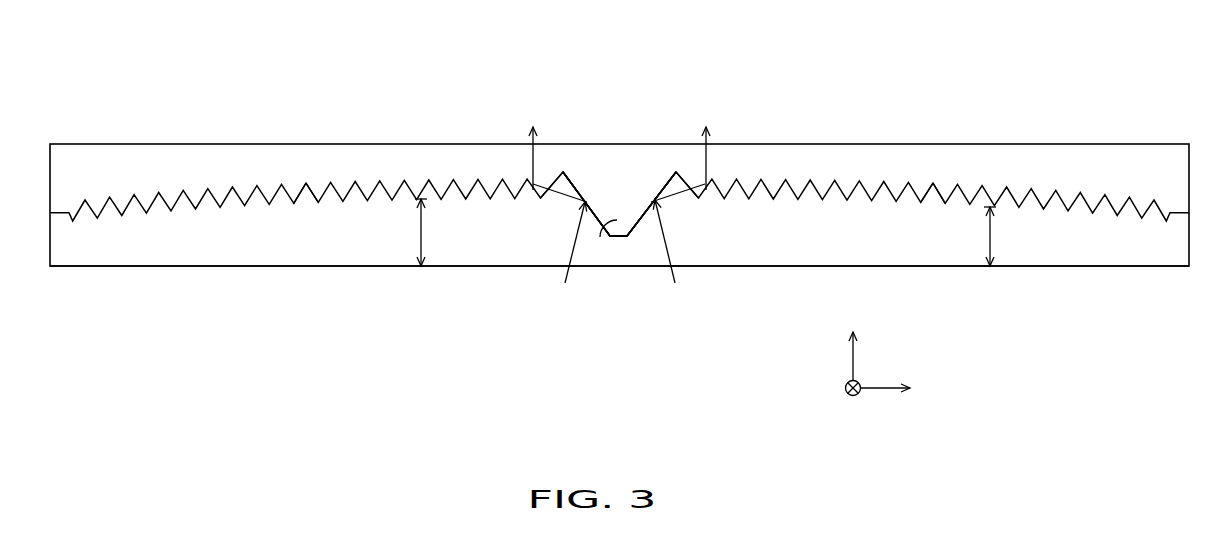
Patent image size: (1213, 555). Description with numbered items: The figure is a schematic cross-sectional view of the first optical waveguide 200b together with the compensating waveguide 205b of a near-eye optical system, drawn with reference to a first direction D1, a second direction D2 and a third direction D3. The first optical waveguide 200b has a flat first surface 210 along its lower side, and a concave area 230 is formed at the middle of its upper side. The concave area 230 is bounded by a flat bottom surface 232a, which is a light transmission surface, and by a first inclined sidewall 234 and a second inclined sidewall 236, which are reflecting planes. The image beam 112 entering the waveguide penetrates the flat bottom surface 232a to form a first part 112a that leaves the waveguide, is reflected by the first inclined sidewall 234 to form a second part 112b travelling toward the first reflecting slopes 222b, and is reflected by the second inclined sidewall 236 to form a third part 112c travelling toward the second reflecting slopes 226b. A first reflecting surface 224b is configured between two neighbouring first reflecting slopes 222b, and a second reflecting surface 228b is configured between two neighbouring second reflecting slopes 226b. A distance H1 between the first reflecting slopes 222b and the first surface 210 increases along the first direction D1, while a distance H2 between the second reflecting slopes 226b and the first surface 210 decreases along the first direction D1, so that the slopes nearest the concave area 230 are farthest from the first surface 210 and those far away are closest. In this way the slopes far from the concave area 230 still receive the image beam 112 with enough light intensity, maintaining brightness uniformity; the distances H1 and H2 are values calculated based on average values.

The compensating waveguide 205b is at (164, 176).
The first reflecting surface 224b is at (302, 193).
The first reflecting slopes 222b is at (313, 193).
The first inclined sidewall 234 is at (584, 198).
The concave area 230 is at (602, 183).
The flat bottom surface 232a is at (622, 237).
The second inclined sidewall 236 is at (661, 193).
The second reflecting slopes 226b is at (927, 193).
The second reflecting surface 228b is at (938, 193).
The first optical waveguide 200b is at (249, 248).
The distance H1 is at (422, 232).
The second part of the image beam 112b is at (557, 193).
The first part of the image beam 112a is at (617, 195).
The third part of the image beam 112c is at (683, 191).
The image beam 112 is at (673, 362).
The first surface 210 is at (767, 267).
The distance H2 is at (992, 236).
The first direction D1 is at (899, 389).
The second direction D2 is at (840, 400).
The third direction D3 is at (853, 340).